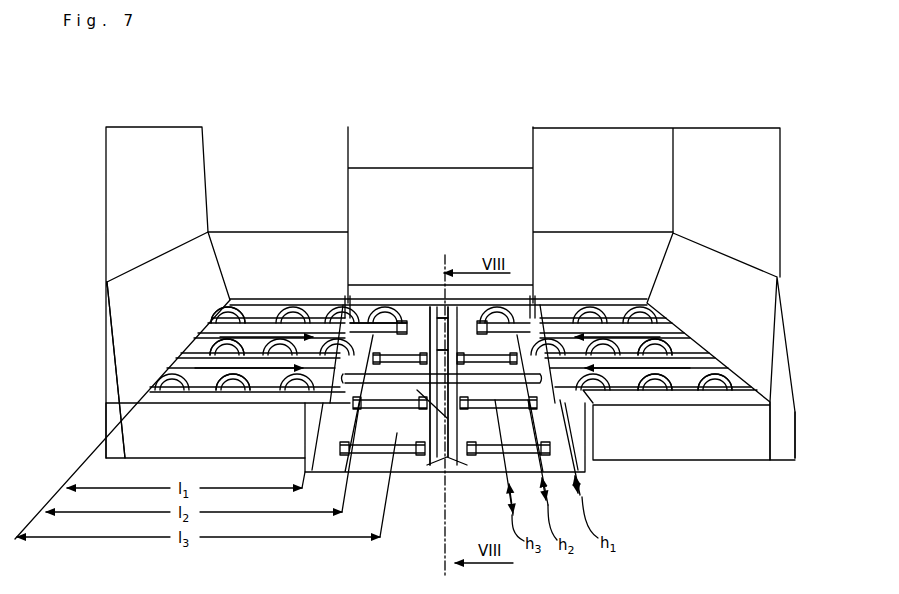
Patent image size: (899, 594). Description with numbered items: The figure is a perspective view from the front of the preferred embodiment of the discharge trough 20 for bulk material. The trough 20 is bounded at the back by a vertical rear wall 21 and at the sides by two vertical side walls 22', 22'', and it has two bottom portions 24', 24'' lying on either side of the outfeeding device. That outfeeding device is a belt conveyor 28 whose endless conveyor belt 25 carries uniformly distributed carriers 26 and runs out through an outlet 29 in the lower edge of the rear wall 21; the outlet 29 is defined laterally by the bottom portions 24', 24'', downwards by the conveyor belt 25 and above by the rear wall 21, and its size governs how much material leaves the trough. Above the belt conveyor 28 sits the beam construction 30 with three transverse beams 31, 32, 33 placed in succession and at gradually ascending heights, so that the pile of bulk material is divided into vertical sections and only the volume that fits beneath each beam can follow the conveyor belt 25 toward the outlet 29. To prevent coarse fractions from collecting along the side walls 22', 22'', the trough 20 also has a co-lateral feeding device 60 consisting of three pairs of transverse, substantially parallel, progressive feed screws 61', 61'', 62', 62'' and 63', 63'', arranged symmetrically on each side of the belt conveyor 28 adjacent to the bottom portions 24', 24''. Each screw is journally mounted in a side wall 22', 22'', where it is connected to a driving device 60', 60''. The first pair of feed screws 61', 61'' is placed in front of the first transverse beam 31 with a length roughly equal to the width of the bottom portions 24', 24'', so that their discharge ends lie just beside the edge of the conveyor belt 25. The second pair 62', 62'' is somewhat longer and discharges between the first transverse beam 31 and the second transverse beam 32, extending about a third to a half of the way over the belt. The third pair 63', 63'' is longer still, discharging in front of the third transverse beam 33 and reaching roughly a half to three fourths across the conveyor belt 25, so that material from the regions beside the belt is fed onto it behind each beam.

The trough 20 is at (435, 148).
The rear wall 21 is at (383, 215).
The side wall 22' is at (212, 275).
The side wall 22'' is at (667, 275).
The bottom portion 24' is at (276, 218).
The bottom portion 24'' is at (615, 221).
The conveyor belt 25 is at (408, 430).
The carriers 26 is at (415, 392).
The belt conveyor 28 is at (415, 325).
The outlet 29 is at (428, 305).
The beam construction 30 is at (443, 457).
The first transverse beam 31 is at (468, 335).
The second transverse beam 32 is at (460, 340).
The third transverse beam 33 is at (450, 345).
The co-lateral feeding device 60 is at (435, 254).
The driving device 60' is at (85, 422).
The driving device 60'' is at (785, 464).
The first feed screw 61' is at (228, 218).
The second feed screw 62' is at (235, 212).
The third feed screw 63' is at (248, 217).
The first feed screw 61'' is at (727, 424).
The second feed screw 62'' is at (686, 424).
The third feed screw 63'' is at (674, 449).